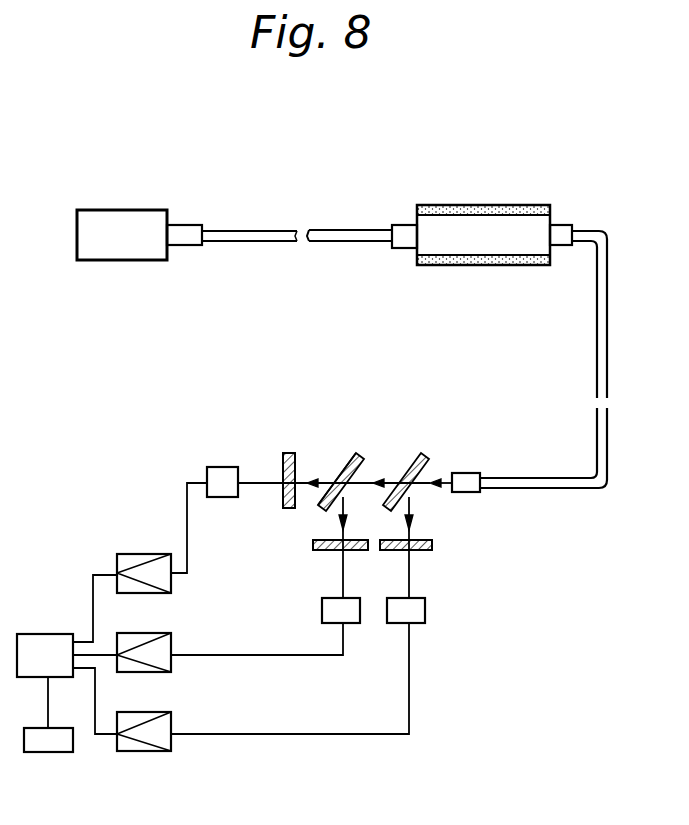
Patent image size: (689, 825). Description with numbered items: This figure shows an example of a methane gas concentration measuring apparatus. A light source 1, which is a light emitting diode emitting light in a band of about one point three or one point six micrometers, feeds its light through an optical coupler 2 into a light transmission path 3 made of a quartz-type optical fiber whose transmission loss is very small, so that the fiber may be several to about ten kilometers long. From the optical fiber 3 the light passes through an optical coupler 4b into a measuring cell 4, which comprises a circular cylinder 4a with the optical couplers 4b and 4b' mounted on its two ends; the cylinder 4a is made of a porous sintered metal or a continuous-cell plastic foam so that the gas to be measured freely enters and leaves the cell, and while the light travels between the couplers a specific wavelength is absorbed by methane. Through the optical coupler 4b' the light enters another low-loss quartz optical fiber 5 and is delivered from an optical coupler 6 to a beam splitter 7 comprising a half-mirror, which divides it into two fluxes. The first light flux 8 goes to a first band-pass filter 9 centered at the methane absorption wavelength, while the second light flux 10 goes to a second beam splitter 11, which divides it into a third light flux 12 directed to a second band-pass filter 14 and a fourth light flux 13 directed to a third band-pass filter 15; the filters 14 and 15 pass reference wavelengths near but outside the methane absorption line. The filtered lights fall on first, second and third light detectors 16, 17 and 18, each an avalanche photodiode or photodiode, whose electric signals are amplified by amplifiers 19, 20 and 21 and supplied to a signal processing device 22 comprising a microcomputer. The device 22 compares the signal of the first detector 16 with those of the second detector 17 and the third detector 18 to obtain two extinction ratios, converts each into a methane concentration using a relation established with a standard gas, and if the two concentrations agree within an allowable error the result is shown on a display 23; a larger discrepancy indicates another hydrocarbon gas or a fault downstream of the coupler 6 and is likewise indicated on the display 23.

The light source 1 is at (113, 228).
The optical coupler 2 is at (181, 236).
The light transmission path 3 is at (337, 236).
The measuring cell 4 is at (483, 215).
The circular cylinder 4a is at (450, 213).
The optical coupler 4b is at (400, 207).
The optical coupler 4b' is at (575, 202).
The optical fiber 5 is at (605, 320).
The optical coupler 6 is at (474, 492).
The beam splitter 7 is at (427, 466).
The first light flux 8 is at (412, 498).
The first band-pass filter 9 is at (432, 545).
The second light flux 10 is at (362, 478).
The second beam splitter 11 is at (358, 458).
The third light flux 12 is at (347, 498).
The fourth light flux 13 is at (328, 474).
The second band-pass filter 14 is at (313, 545).
The third band-pass filter 15 is at (288, 451).
The first light detector 16 is at (426, 611).
The second light detector 17 is at (360, 616).
The third light detector 18 is at (222, 468).
The amplifier 19 is at (172, 746).
The amplifier 20 is at (172, 640).
The amplifier 21 is at (172, 580).
The signal processing device 22 is at (47, 636).
The display 23 is at (55, 752).